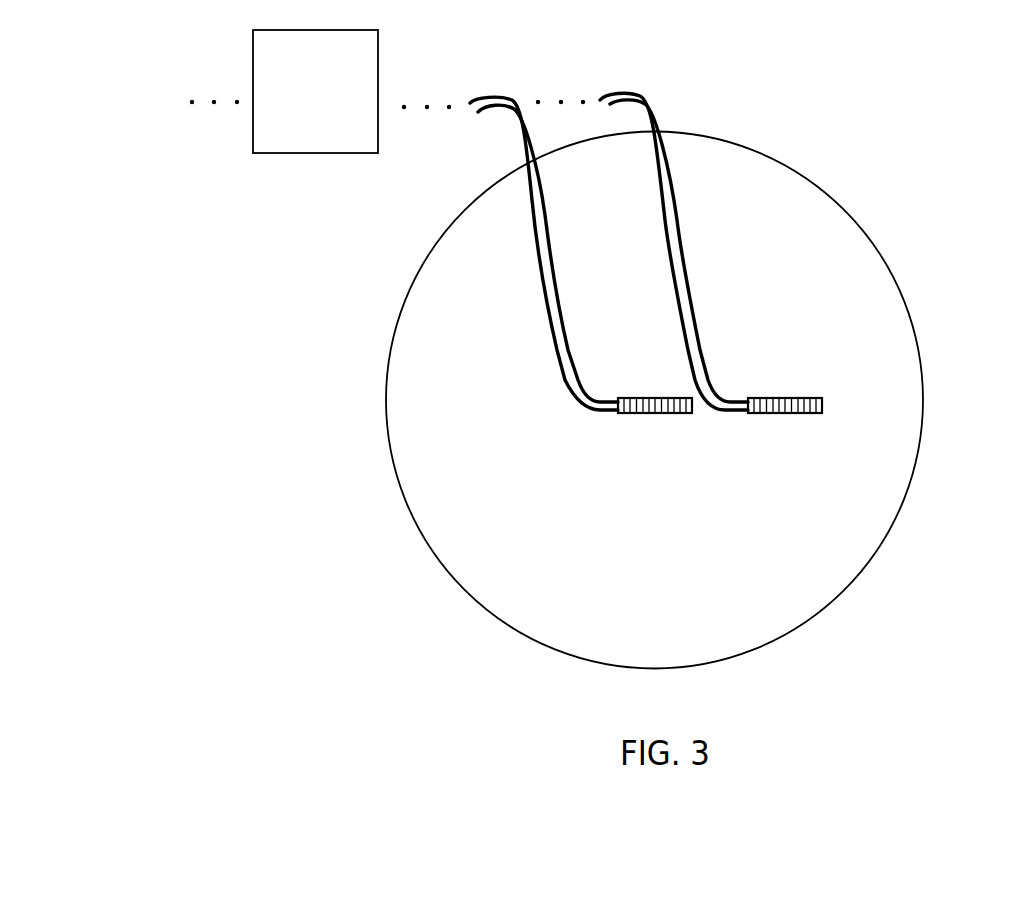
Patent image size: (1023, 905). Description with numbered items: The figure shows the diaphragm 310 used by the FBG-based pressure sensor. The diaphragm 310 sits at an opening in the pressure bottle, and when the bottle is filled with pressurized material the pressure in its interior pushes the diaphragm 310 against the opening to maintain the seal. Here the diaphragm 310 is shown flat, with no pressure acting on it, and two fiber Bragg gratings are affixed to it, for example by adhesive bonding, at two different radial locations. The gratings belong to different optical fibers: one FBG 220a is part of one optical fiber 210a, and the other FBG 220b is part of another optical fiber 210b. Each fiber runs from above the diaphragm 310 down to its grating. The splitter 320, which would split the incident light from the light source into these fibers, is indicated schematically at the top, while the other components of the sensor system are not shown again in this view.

The splitter 320 is at (340, 126).
The diaphragm 310 is at (686, 626).
The optical fiber 210a is at (512, 265).
The optical fiber 210b is at (716, 280).
The FBG 220a is at (608, 434).
The FBG 220b is at (808, 442).